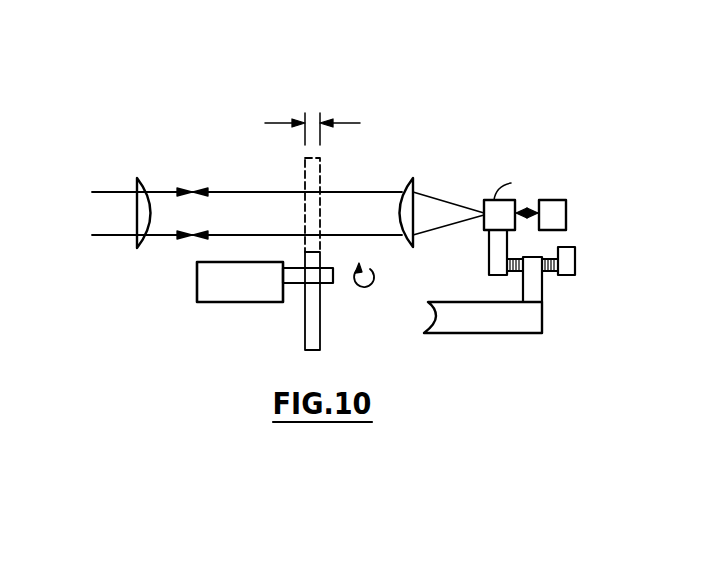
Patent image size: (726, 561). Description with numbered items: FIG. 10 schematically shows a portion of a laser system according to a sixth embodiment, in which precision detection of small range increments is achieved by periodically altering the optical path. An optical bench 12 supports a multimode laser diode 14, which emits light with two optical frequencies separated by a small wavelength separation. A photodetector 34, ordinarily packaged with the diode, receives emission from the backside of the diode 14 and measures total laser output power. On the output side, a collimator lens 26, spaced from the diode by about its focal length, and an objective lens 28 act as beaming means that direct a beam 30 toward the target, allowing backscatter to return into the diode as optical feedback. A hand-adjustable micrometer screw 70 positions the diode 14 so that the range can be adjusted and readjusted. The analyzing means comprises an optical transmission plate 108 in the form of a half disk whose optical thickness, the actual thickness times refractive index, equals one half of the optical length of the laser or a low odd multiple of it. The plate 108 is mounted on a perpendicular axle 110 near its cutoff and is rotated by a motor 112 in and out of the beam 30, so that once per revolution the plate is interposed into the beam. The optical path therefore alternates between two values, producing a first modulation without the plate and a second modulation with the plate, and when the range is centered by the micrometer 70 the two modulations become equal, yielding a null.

The optical bench 12 is at (462, 334).
The laser diode 14 is at (486, 227).
The collimator lens 26 is at (410, 180).
The objective lens 28 is at (141, 180).
The beam 30 is at (222, 192).
The photodetector 34 is at (563, 232).
The micrometer screw 70 is at (576, 268).
The optical transmission plate 108 is at (321, 320).
The axle 110 is at (292, 285).
The motor 112 is at (197, 275).